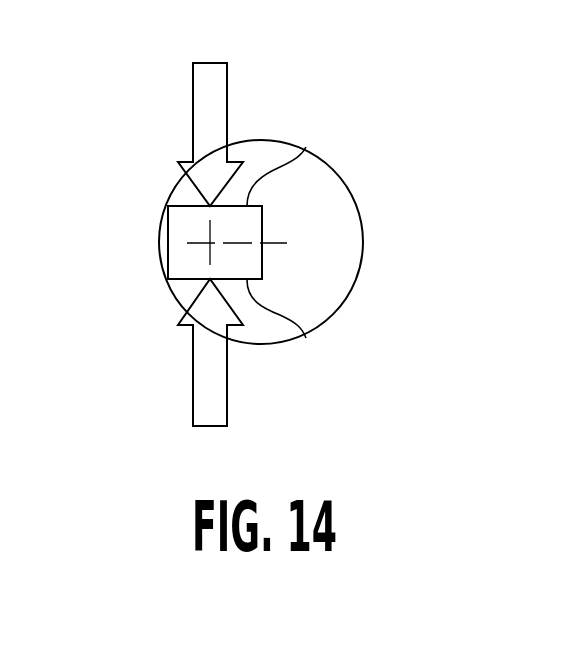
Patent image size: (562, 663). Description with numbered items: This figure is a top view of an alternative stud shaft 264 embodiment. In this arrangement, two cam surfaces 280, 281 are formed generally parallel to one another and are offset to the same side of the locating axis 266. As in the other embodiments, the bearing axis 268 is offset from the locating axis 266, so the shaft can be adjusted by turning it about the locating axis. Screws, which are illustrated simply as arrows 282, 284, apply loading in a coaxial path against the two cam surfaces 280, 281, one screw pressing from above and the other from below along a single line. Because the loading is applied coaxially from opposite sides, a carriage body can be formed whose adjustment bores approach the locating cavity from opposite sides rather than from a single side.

The lens assembly 264 is at (447, 196).
The locating axis 266 is at (262, 243).
The bearing axis 268 is at (210, 243).
The cam surface 280 is at (306, 338).
The cam surface 281 is at (306, 147).
The screw (illustrated as arrow) 282 is at (193, 408).
The screw (illustrated as arrow) 284 is at (193, 95).